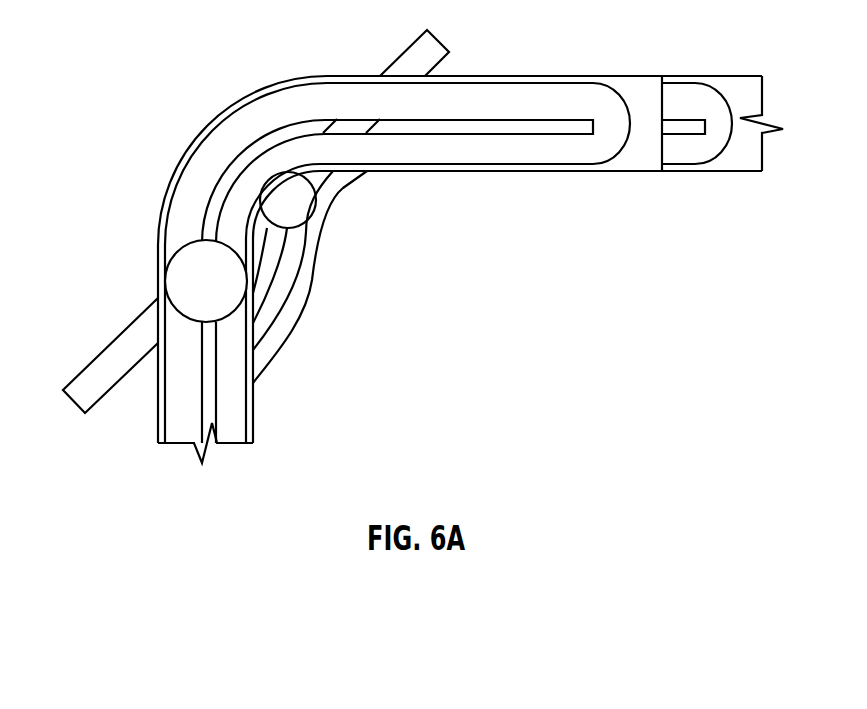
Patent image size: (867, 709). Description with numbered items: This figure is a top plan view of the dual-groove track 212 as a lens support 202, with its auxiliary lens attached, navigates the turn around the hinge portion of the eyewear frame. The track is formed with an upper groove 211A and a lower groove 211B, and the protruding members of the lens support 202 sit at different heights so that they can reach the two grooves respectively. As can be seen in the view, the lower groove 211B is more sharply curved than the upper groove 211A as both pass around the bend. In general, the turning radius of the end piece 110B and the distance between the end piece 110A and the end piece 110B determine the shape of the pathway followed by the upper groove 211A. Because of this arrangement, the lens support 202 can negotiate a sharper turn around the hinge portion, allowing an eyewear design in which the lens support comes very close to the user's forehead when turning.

The dual-groove track 212 is at (525, 44).
The lens support 202 is at (378, 38).
The upper groove 211A is at (237, 167).
The lower groove 211B is at (277, 268).
The end piece 110A is at (205, 281).
The end piece 110B is at (293, 200).